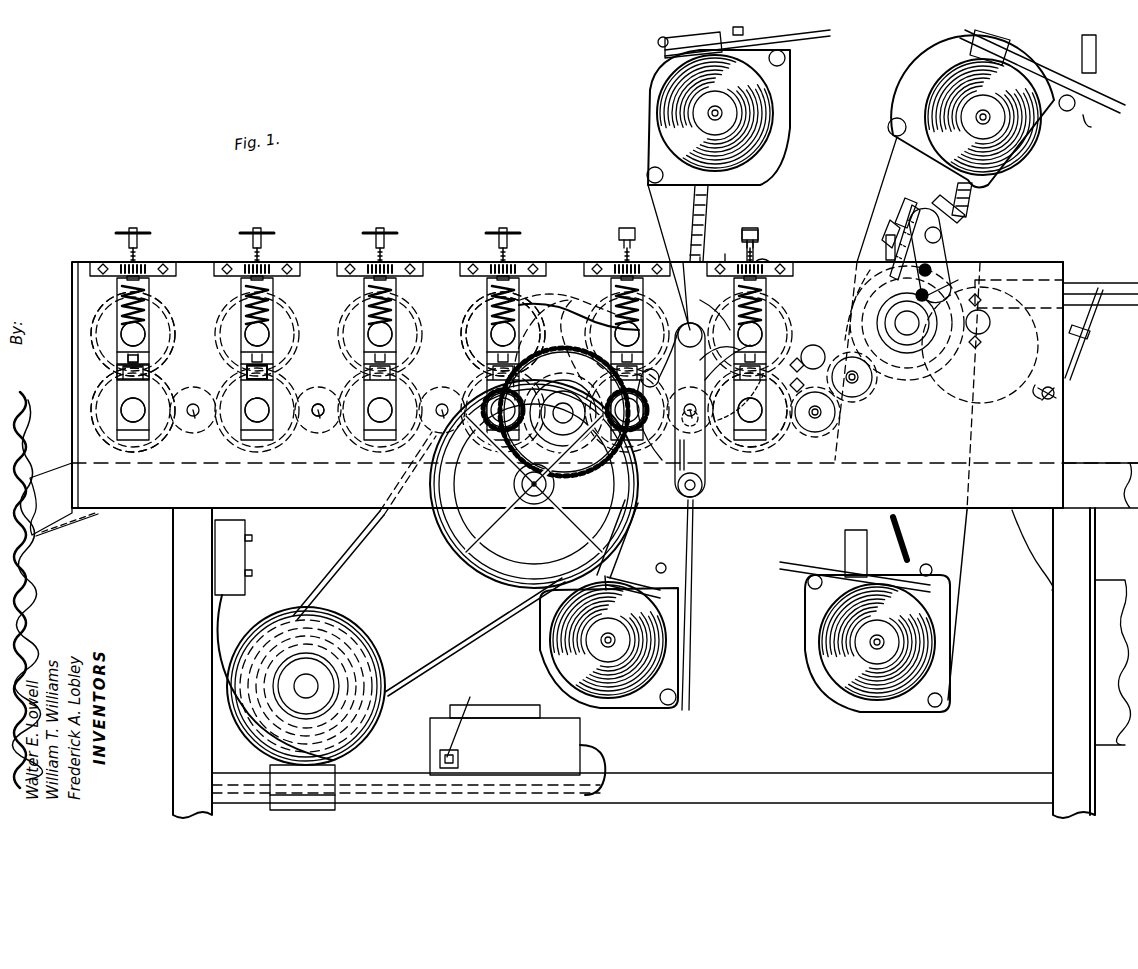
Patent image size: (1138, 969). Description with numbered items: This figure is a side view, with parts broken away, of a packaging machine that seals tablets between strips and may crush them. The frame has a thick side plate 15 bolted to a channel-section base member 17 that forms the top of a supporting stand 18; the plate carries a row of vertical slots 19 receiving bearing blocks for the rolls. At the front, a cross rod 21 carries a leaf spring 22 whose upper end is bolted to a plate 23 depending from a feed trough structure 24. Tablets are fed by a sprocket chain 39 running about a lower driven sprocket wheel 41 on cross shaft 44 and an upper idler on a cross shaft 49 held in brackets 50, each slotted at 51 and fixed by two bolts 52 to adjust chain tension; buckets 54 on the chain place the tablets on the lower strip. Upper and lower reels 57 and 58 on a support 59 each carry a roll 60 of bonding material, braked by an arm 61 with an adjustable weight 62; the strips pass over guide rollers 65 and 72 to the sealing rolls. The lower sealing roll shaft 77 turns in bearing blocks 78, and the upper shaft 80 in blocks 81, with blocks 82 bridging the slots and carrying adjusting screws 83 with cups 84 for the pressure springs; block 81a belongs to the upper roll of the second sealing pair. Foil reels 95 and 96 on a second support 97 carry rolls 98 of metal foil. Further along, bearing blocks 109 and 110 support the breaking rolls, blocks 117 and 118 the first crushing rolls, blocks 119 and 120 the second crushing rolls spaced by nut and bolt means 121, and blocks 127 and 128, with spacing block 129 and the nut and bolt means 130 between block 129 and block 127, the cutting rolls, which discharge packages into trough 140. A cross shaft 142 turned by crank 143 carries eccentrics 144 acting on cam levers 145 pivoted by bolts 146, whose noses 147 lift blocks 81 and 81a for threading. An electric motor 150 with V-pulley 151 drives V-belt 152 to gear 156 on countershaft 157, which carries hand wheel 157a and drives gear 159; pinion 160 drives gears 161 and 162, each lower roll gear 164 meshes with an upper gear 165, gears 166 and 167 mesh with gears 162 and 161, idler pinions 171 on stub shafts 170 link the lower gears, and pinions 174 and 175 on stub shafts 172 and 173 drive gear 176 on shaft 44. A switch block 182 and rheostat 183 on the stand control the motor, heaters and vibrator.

The side plate 15 is at (1056, 420).
The base member 17 is at (1098, 480).
The supporting stand 18 is at (168, 596).
The vertical slots 19 is at (576, 290).
The cross rod 21 is at (1044, 387).
The leaf spring 22 is at (1083, 358).
The plate 23 is at (1086, 323).
The feed trough structure 24 is at (1095, 280).
The sprocket chain 39 is at (892, 222).
The lower driven sprocket wheel 41 is at (978, 372).
The cross shaft 44 is at (907, 323).
The cross shaft 49 is at (920, 200).
The supporting bracket 50 is at (960, 252).
The slot 51 is at (888, 240).
The bolts 52 is at (895, 275).
The buckets 54 is at (966, 208).
The upper reel 57 is at (938, 74).
The lower reel 58 is at (835, 688).
The support 59 is at (968, 188).
The roll of thermal bonding material 60 is at (890, 160).
The arm 61 is at (1098, 127).
The adjustable weight 62 is at (1063, 60).
The guide roller 65 is at (990, 323).
The guide roller 72 is at (848, 305).
The shaft 77 is at (760, 460).
The bearing blocks 78 is at (763, 446).
The shaft 80 is at (627, 334).
The bearing blocks 81 is at (753, 344).
The bearing block 81a is at (636, 306).
The blocks 82 is at (716, 261).
The adjusting screws 83 is at (752, 252).
The cups 84 is at (764, 260).
The upper reel 95 is at (653, 80).
The lower reel 96 is at (607, 710).
The second support 97 is at (708, 200).
The roll of metal foil 98 is at (663, 110).
The bearing block 109 is at (503, 334).
The bearing block 110 is at (556, 422).
The supporting block 117 is at (380, 334).
The supporting block 118 is at (380, 398).
The bearing block 119 is at (257, 334).
The bearing block 120 is at (257, 400).
The adjustable nut and bolt means 121 is at (247, 367).
The bearing block 127 is at (145, 334).
The bearing block 128 is at (130, 420).
The block 129 is at (122, 380).
The nut 130 is at (128, 360).
The trough 140 is at (74, 517).
The cross shaft 142 is at (687, 520).
The crank 143 is at (700, 489).
The eccentrics 144 is at (695, 495).
The cam levers 145 is at (705, 440).
The bolts 146 is at (655, 366).
The nose 147 is at (750, 410).
The electric motor 150 is at (338, 630).
The V-pulley 151 is at (302, 787).
The V-belt 152 is at (450, 647).
The gear 156 is at (472, 513).
The cross countershaft 157 is at (465, 552).
The hand wheel 157a is at (492, 571).
The gear 159 is at (550, 290).
The pinion 160 is at (564, 412).
The gear 161 is at (635, 510).
The gear 162 is at (480, 340).
The gear 164 is at (146, 450).
The gear 165 is at (100, 322).
The gear 166 is at (488, 323).
The gear 167 is at (592, 327).
The stub shafts 170 is at (195, 417).
The pinion 171 is at (320, 416).
The stub shaft 172 is at (828, 418).
The stub shaft 173 is at (865, 391).
The pinion 174 is at (823, 422).
The pinion 175 is at (868, 385).
The gear 176 is at (981, 342).
The switch block 182 is at (240, 554).
The rheostat 183 is at (1110, 680).